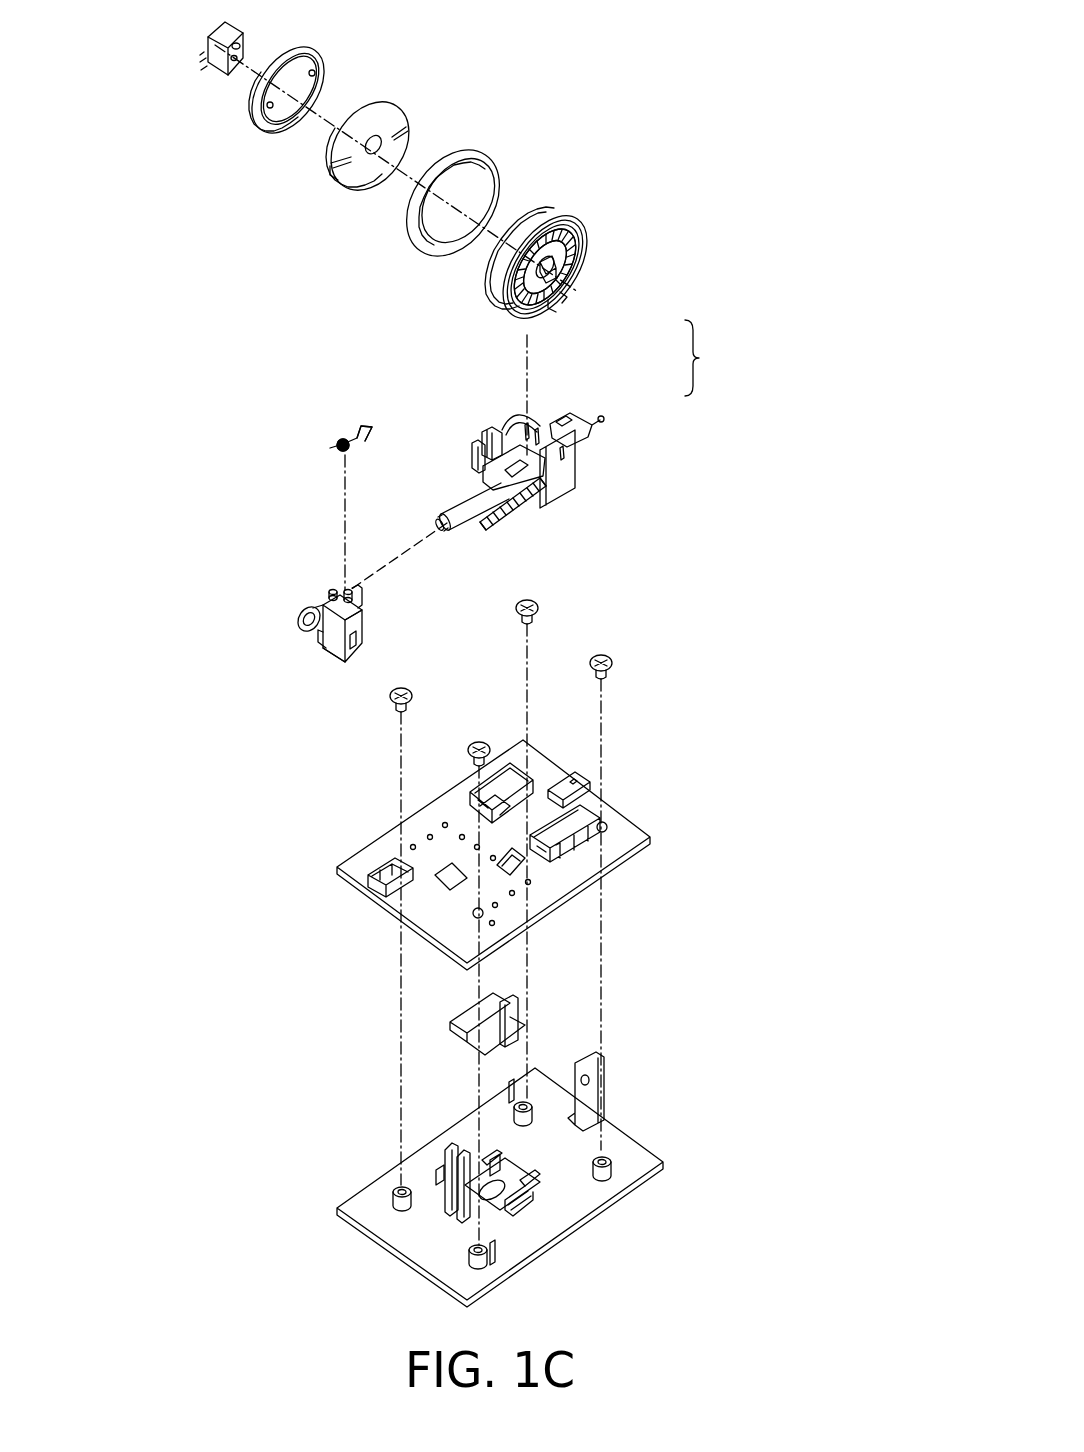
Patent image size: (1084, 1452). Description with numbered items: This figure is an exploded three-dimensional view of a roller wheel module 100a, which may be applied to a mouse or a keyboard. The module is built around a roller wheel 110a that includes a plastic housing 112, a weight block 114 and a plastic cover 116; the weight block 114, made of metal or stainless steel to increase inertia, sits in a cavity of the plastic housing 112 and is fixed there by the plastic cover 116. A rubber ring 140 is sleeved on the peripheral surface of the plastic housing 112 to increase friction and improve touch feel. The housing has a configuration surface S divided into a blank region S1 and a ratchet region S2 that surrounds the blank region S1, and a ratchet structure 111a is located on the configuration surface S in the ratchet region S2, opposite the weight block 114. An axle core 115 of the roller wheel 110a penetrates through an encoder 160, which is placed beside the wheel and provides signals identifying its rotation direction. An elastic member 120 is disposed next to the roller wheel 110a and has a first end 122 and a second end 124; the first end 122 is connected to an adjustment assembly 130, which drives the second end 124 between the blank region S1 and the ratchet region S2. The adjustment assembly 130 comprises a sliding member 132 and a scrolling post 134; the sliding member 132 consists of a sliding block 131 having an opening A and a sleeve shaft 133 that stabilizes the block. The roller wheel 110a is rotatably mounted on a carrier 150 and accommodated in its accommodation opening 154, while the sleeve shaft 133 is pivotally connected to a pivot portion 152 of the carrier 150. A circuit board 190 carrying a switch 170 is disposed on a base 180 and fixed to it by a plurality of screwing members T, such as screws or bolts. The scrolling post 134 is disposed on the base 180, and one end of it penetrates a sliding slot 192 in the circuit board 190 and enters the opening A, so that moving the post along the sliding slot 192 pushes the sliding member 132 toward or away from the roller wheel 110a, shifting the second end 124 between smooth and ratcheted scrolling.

The roller wheel module 100a is at (813, 1291).
The roller wheel 110a is at (467, 183).
The plastic housing 112 is at (547, 225).
The weight block 114 is at (395, 117).
The plastic cover 116 is at (323, 68).
The ratchet structure 111a is at (583, 250).
The axle core 115 is at (577, 283).
The elastic member 120 is at (368, 435).
The first end 122 is at (335, 434).
The second end 124 is at (358, 416).
The adjustment assembly 130 is at (457, 820).
The sliding block 131 is at (330, 653).
The sliding member 132 is at (274, 664).
The sleeve shaft 133 is at (302, 602).
The scrolling post 134 is at (512, 1040).
The rubber ring 140 is at (473, 157).
The carrier 150 is at (541, 464).
The pivot portion 152 is at (470, 515).
The accommodation opening 154 is at (560, 422).
The encoder 160 is at (240, 43).
The switch 170 is at (565, 777).
The base 180 is at (622, 1153).
The circuit board 190 is at (520, 844).
The sliding slot 192 is at (502, 860).
The opening A is at (346, 642).
The configuration surface S is at (632, 344).
The blank region S1 is at (548, 308).
The ratchet region S2 is at (567, 297).
The screwing members T is at (530, 598).